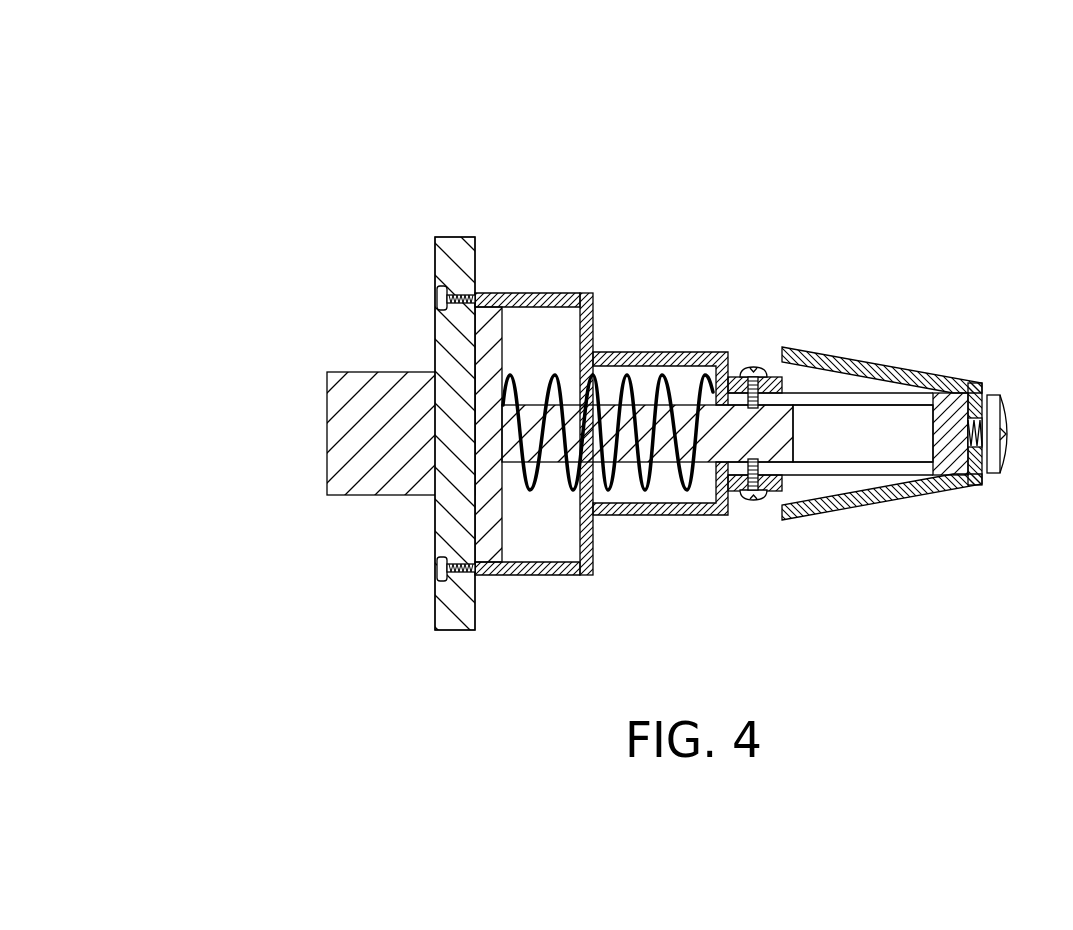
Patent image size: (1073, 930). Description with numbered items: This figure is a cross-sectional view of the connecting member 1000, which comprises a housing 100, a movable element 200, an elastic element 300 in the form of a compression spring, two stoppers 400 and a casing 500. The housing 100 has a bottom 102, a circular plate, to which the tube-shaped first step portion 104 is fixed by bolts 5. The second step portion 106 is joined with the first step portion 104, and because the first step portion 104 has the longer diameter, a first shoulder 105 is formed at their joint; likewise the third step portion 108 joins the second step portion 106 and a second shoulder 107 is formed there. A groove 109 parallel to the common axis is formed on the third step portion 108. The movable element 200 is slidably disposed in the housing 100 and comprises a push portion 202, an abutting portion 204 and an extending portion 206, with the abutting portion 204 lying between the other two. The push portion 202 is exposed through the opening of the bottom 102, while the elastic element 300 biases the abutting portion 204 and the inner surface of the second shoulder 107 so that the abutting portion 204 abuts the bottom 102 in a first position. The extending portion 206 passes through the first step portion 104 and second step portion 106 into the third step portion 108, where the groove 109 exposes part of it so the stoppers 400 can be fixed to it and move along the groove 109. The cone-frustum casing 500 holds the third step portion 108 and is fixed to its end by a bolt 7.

The connecting member 1000 is at (285, 128).
The housing 100 is at (890, 176).
The bottom 102 is at (455, 250).
The first step portion 104 is at (527, 290).
The first shoulder 105 is at (610, 350).
The second step portion 106 is at (667, 350).
The second shoulder 107 is at (736, 376).
The third step portion 108 is at (873, 392).
The groove 109 is at (848, 468).
The movable element 200 is at (236, 455).
The push portion 202 is at (333, 468).
The abutting portion 204 is at (500, 516).
The extending portion 206 is at (555, 462).
The elastic element 300 is at (615, 482).
The stopper 400 is at (770, 367).
The casing 500 is at (945, 378).
The bolt 5 is at (437, 296).
The bolt 7 is at (992, 417).